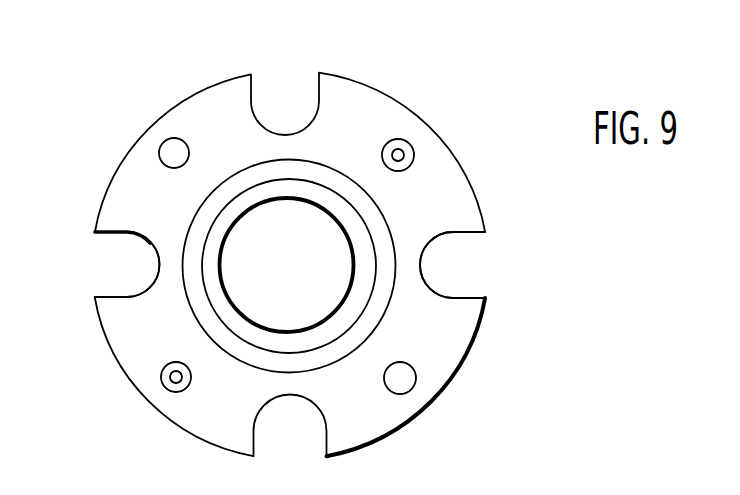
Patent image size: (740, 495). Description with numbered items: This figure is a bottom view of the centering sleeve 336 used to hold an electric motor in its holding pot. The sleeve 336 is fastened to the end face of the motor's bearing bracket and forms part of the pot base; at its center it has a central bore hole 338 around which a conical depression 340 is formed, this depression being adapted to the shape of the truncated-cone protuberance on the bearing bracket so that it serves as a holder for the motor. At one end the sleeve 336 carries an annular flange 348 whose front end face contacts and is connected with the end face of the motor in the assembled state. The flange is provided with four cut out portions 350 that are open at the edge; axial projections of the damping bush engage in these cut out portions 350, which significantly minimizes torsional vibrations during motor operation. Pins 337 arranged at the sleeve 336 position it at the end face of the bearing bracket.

The sleeve 336 is at (127, 137).
The pins 337 is at (412, 151).
The central bore hole 338 is at (261, 217).
The conical depression 340 is at (197, 298).
The annular flange 348 is at (458, 336).
The cut out portions 350 is at (117, 297).